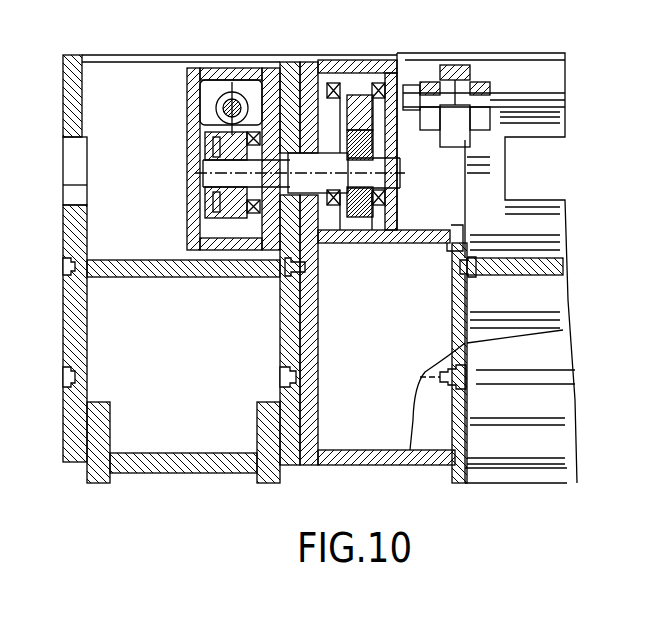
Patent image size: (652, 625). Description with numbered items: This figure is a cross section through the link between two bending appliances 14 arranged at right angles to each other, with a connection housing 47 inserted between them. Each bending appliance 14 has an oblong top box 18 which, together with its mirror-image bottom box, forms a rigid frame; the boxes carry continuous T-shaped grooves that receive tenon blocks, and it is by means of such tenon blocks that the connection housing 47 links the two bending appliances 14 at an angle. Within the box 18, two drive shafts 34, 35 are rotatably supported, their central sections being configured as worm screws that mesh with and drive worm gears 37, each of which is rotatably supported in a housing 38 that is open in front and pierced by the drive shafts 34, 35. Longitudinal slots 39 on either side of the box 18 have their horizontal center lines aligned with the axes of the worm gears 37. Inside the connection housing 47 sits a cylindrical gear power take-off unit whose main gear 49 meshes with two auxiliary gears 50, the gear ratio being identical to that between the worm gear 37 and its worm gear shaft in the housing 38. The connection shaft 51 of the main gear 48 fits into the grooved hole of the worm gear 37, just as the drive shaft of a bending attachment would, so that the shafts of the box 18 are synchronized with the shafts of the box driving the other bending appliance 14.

The bending appliance 14 is at (163, 484).
The top box 18 is at (66, 336).
The drive shaft 34 is at (560, 97).
The drive shaft 35 is at (222, 104).
The worm gear 37 is at (232, 220).
The housing 38 is at (188, 204).
The longitudinal slot 39 is at (68, 190).
The connection housing 47 is at (370, 467).
The main gear 48 is at (398, 142).
The main gear 49 is at (358, 222).
The auxiliary gear 50 is at (407, 115).
The connection shaft 51 is at (312, 260).